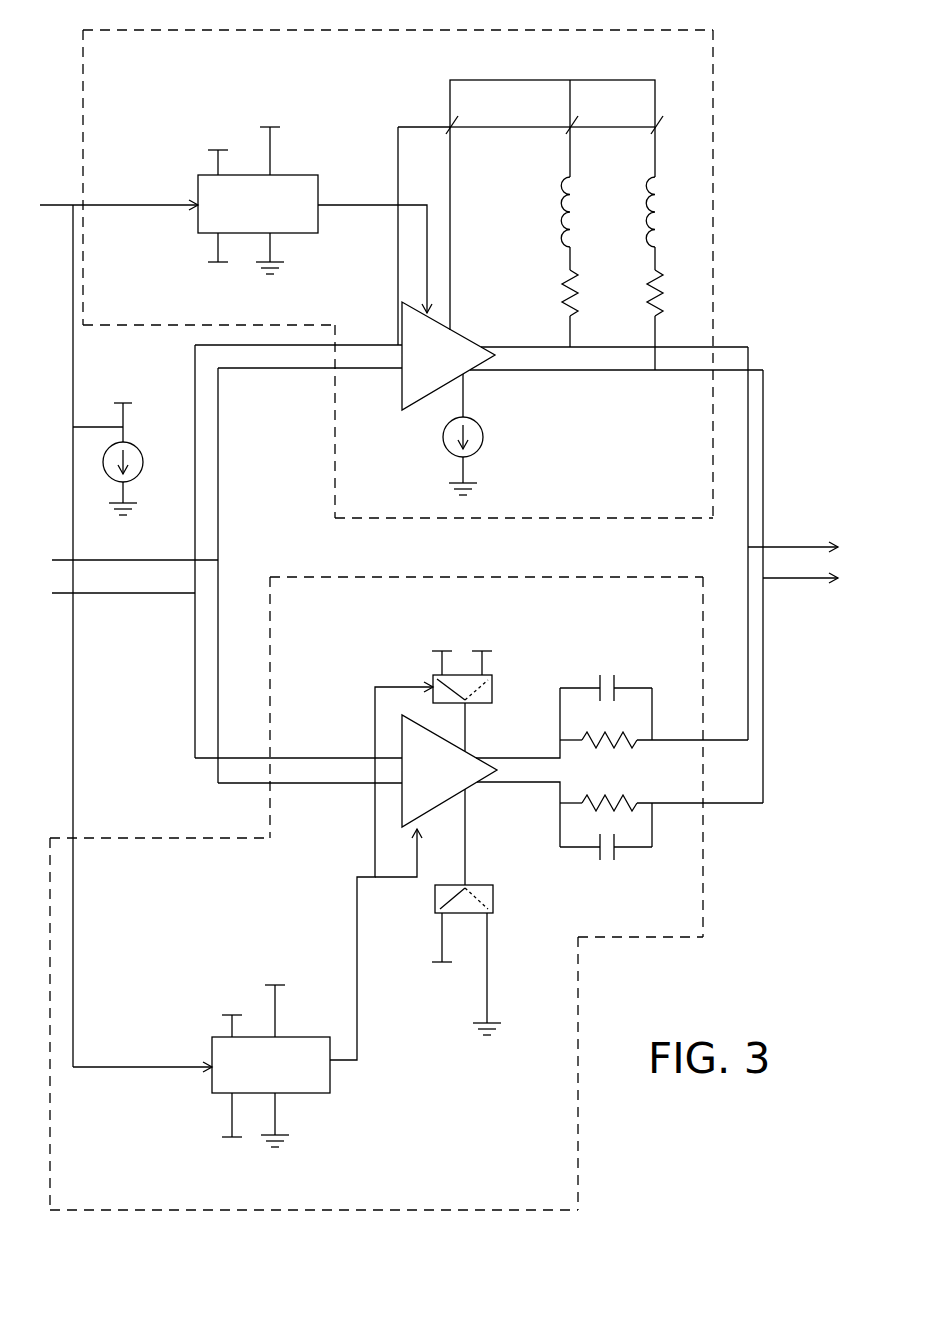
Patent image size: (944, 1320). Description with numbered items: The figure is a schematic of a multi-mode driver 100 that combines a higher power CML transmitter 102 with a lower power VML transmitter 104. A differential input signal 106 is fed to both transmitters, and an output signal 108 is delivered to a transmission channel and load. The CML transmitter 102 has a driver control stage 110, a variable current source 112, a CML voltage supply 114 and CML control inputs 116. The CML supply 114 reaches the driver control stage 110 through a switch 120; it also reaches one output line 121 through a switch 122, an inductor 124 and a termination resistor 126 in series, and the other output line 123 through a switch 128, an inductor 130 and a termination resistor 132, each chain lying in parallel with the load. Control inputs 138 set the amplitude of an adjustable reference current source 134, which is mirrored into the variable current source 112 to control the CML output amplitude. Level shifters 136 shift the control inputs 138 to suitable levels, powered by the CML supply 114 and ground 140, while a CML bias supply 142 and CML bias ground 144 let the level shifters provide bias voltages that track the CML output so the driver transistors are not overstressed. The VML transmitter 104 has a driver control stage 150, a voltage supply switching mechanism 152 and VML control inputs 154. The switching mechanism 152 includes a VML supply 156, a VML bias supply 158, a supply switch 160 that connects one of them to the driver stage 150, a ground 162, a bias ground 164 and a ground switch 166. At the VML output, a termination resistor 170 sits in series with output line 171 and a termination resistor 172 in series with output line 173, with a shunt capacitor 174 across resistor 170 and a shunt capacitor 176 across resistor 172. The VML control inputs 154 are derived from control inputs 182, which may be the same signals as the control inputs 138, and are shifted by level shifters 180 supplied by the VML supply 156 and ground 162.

The driver 100 is at (745, 68).
The CML transmitter 102 is at (713, 170).
The VML transmitter 104 is at (713, 886).
The differential input signal 106 is at (155, 556).
The output signal 108 is at (786, 545).
The driver control stage 110 is at (420, 412).
The variable current source 112 is at (472, 455).
The CML voltage supply 114 is at (293, 92).
The CML control inputs 116 is at (352, 204).
The switch 120 is at (455, 122).
The output line 121 is at (530, 346).
The switch 122 is at (576, 122).
The output line 123 is at (530, 374).
The inductor 124 is at (582, 200).
The termination resistor 126 is at (582, 297).
The switch 128 is at (663, 120).
The inductor 130 is at (667, 200).
The termination resistor 132 is at (667, 300).
The adjustable reference current source 134 is at (134, 446).
The level shifters 136 is at (300, 174).
The control inputs 138 is at (135, 204).
The ground 140 is at (282, 278).
The CML bias supply 142 is at (196, 114).
The CML bias ground 144 is at (184, 292).
The driver control stage 150 is at (477, 800).
The voltage supply switching mechanism 152 is at (525, 668).
The VML control inputs 154 is at (361, 876).
The VML supply 156 is at (519, 618).
The VML bias supply 158 is at (362, 632).
The supply switch 160 is at (497, 698).
The ground 162 is at (498, 1038).
The bias ground 164 is at (412, 996).
The ground switch 166 is at (498, 902).
The termination resistor 170 is at (612, 748).
The output line 171 is at (522, 758).
The termination resistor 172 is at (598, 820).
The output line 173 is at (536, 785).
The shunt capacitor 174 is at (616, 680).
The shunt capacitor 176 is at (616, 864).
The level shifters 180 is at (333, 1086).
The control inputs 182 is at (126, 1066).